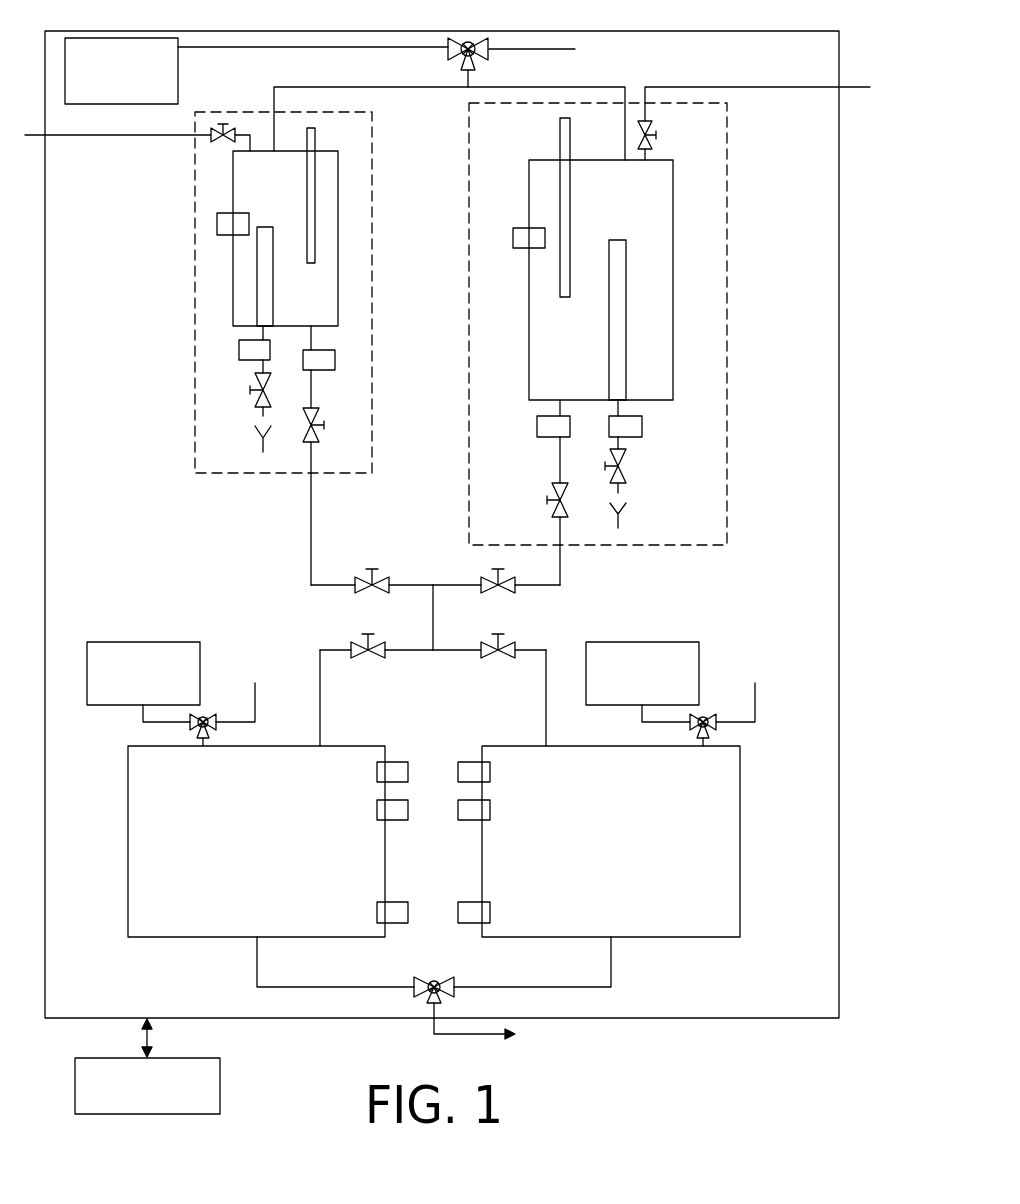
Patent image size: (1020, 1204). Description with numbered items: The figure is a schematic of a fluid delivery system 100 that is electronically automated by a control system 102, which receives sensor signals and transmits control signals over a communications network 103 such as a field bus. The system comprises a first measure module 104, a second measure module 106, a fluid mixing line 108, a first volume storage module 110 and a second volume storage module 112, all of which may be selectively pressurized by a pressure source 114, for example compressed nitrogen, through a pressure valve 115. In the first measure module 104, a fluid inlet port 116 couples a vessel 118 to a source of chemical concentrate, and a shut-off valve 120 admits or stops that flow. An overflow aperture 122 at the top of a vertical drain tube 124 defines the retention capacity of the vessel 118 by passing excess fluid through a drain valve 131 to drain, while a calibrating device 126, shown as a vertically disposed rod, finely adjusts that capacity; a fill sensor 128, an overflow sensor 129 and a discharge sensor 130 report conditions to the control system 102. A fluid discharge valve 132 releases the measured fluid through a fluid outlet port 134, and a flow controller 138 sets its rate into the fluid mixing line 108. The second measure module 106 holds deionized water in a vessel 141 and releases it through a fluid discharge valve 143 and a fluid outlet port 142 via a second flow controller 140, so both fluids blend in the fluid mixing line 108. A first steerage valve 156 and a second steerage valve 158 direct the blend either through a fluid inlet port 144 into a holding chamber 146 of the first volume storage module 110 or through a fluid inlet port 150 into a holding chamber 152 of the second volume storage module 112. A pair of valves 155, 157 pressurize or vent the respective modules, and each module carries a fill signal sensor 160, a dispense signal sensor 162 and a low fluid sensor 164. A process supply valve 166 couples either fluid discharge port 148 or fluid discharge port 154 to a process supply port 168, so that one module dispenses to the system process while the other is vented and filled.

The fluid delivery system 100 is at (752, 1019).
The control system 102 is at (221, 1078).
The communications network 103 is at (150, 1046).
The first measure module 104 is at (236, 476).
The second measure module 106 is at (660, 547).
The fluid mixing line 108 is at (435, 636).
The first volume storage module 110 is at (256, 859).
The second volume storage module 112 is at (615, 859).
The pressure source 114 is at (178, 57).
The pressure valve 115 is at (453, 57).
The fluid inlet port 116 is at (195, 134).
The vessel 118 is at (232, 289).
The shut-off valve 120 is at (230, 131).
The overflow aperture 122 is at (264, 226).
The vertical drain tube 124 is at (267, 292).
The calibrating device 126 is at (305, 242).
The fill sensor 128 is at (216, 222).
The overflow sensor 129 is at (238, 346).
The discharge sensor 130 is at (338, 359).
The drain valve 131 is at (249, 399).
The fluid discharge valve 132 is at (326, 433).
The fluid outlet port 134 is at (314, 485).
The flow controller 138 is at (365, 592).
The second flow controller 140 is at (506, 593).
The vessel 141 is at (529, 323).
The fluid outlet port 142 is at (562, 549).
The fluid discharge valve 143 is at (551, 493).
The fluid inlet port 144 is at (320, 724).
The holding chamber 146 is at (197, 940).
The fluid discharge port 148 is at (259, 948).
The fluid inlet port 150 is at (546, 724).
The holding chamber 152 is at (690, 939).
The fluid discharge port 154 is at (611, 949).
The valve 155 is at (218, 725).
The first steerage valve 156 is at (364, 659).
The valve 157 is at (690, 723).
The second steerage valve 158 is at (505, 658).
The fill signal sensor 160 is at (377, 774).
The dispense signal sensor 162 is at (377, 808).
The low fluid sensor 164 is at (377, 910).
The process supply valve 166 is at (437, 977).
The process supply port 168 is at (433, 1035).